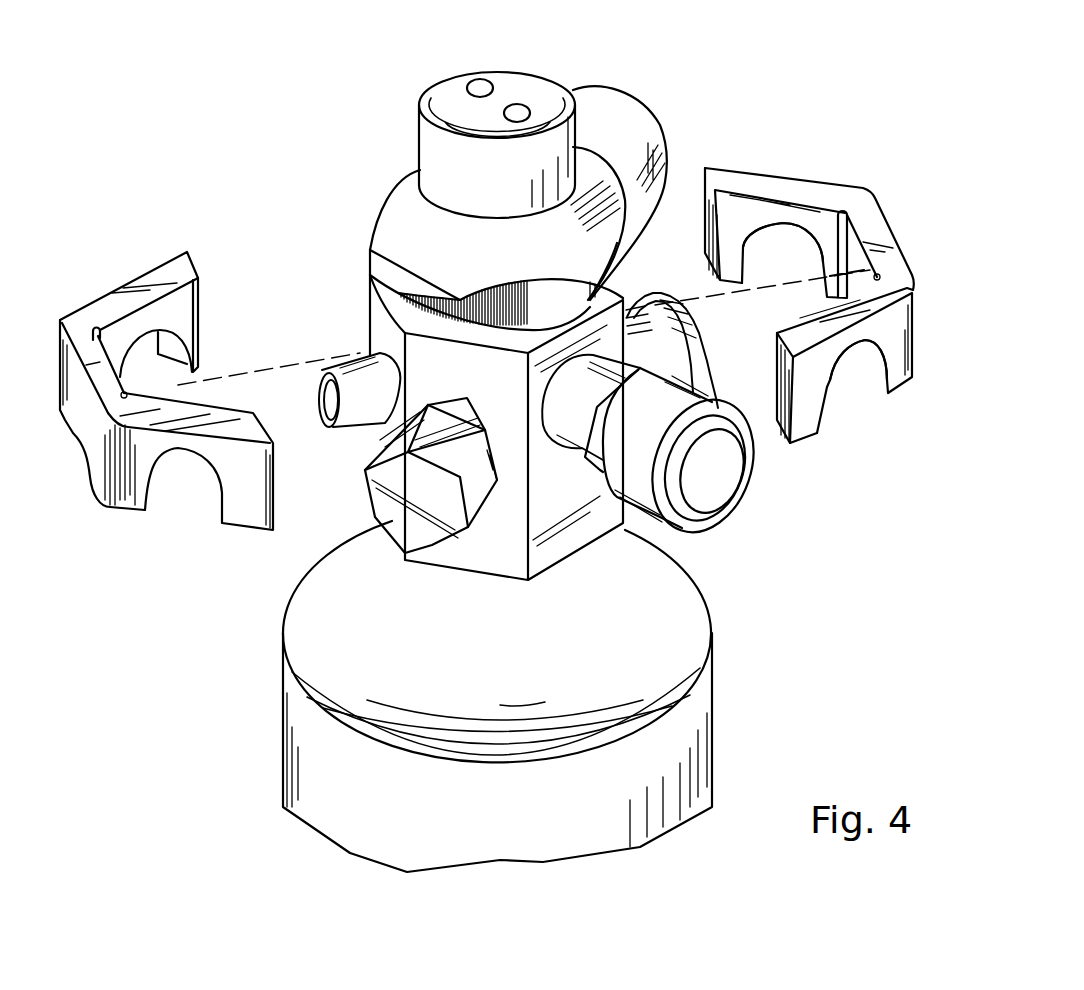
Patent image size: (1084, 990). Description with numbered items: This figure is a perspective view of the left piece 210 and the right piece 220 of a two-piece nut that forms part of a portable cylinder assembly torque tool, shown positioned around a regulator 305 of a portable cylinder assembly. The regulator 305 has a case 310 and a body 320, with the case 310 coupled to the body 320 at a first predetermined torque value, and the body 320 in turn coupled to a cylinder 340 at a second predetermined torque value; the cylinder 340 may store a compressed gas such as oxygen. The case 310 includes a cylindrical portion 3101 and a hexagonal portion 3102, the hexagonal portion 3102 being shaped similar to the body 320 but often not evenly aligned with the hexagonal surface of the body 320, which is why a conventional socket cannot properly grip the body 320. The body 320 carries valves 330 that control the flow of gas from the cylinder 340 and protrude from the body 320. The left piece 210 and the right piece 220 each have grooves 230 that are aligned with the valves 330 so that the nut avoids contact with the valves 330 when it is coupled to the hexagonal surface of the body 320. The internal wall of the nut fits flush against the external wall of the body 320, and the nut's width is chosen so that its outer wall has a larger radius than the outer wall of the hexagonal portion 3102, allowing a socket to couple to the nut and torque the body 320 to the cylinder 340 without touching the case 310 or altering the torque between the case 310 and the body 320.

The left piece 210 is at (147, 270).
The right piece 220 is at (785, 187).
The grooves 230 is at (173, 348).
The regulator 305 is at (302, 161).
The case 310 is at (407, 227).
The cylindrical portion 3101 is at (455, 118).
The hexagonal portion 3102 is at (340, 176).
The body 320 is at (488, 540).
The valves 330 is at (718, 480).
The cylinder 340 is at (283, 740).